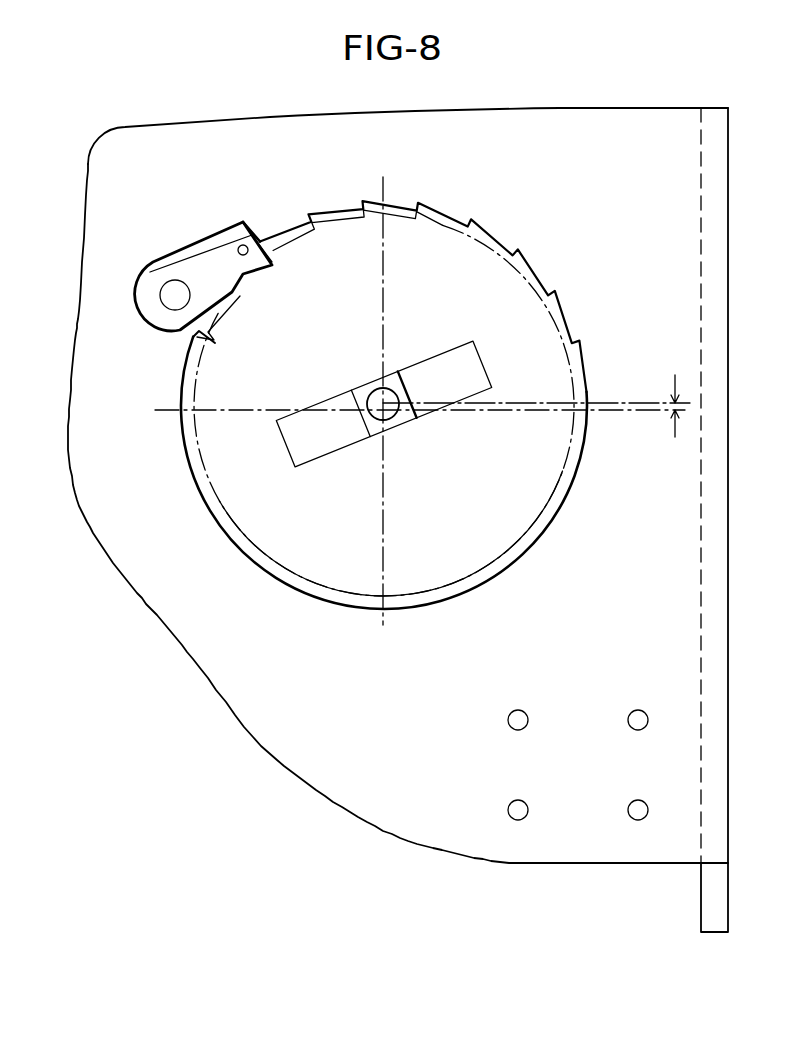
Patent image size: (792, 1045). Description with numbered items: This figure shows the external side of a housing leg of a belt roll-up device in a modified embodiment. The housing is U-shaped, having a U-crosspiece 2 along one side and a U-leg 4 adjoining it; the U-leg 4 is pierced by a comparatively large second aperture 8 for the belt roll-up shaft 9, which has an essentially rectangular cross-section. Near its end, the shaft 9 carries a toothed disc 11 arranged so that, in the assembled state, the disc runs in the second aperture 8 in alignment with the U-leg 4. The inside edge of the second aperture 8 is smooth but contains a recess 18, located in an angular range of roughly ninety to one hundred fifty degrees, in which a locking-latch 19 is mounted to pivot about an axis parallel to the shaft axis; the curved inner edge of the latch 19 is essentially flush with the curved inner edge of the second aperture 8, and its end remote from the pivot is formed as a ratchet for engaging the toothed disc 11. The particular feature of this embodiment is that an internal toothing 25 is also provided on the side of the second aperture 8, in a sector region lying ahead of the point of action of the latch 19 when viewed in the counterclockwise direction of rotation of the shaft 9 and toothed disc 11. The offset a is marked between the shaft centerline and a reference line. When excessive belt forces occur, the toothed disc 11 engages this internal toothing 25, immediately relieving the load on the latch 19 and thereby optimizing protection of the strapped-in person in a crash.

The U-crosspiece 2 is at (710, 113).
The U-leg 4 is at (511, 119).
The second aperture 8 is at (586, 456).
The belt roll-up shaft 9 is at (432, 367).
The toothed disc 11 is at (295, 258).
The recess 18 is at (227, 224).
The locking-latch 19 is at (205, 262).
The internal toothing 25 is at (457, 215).
The offset dimension a is at (688, 403).